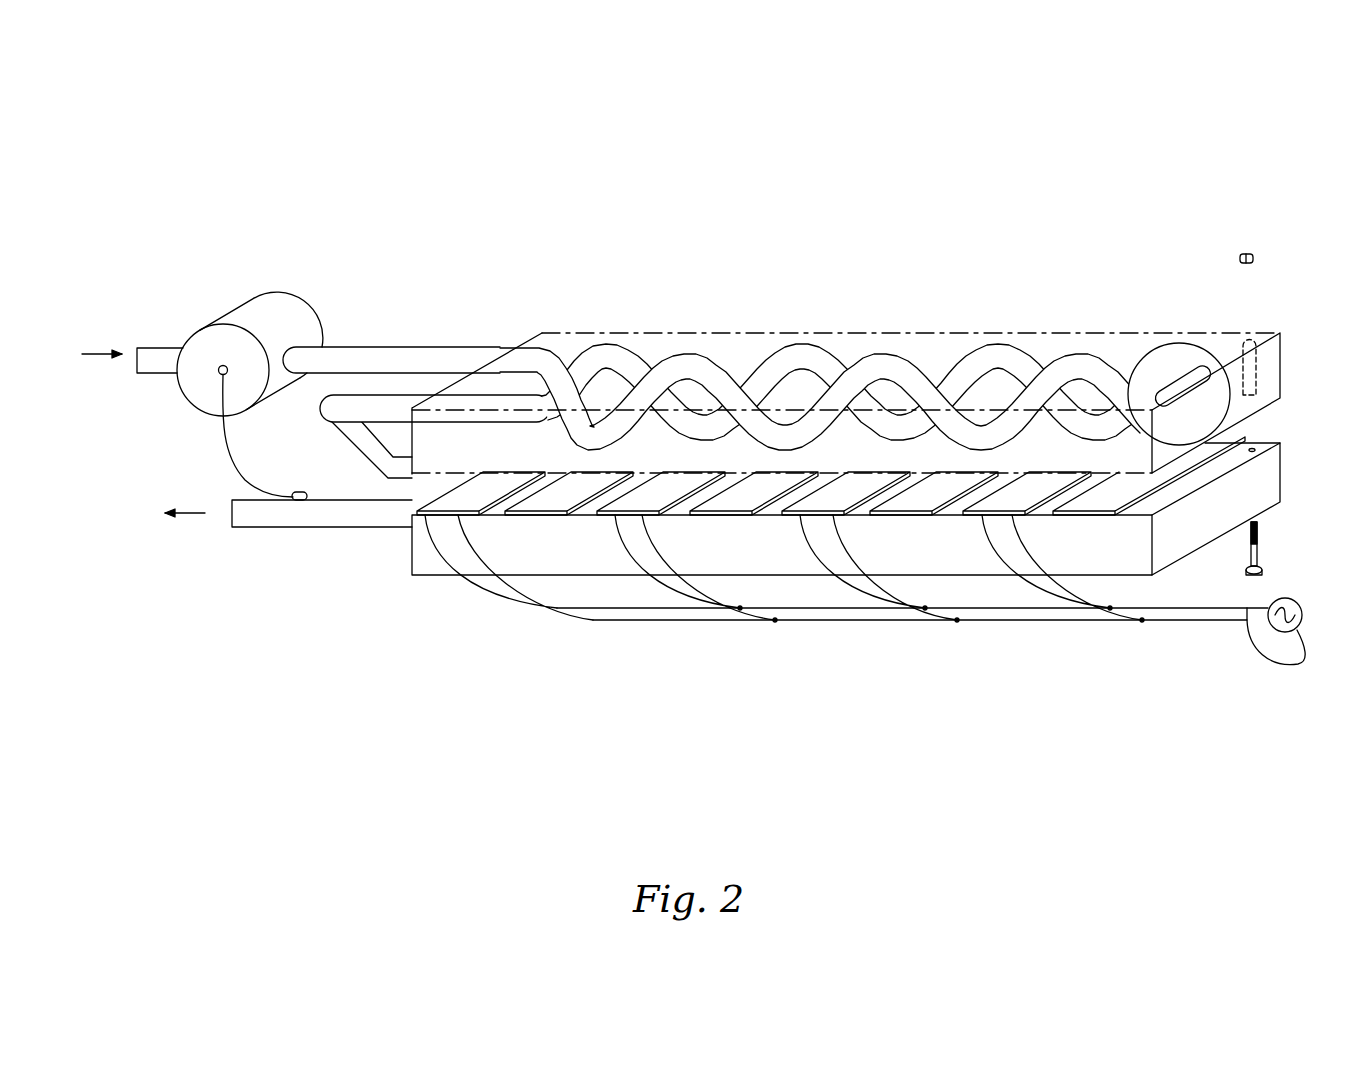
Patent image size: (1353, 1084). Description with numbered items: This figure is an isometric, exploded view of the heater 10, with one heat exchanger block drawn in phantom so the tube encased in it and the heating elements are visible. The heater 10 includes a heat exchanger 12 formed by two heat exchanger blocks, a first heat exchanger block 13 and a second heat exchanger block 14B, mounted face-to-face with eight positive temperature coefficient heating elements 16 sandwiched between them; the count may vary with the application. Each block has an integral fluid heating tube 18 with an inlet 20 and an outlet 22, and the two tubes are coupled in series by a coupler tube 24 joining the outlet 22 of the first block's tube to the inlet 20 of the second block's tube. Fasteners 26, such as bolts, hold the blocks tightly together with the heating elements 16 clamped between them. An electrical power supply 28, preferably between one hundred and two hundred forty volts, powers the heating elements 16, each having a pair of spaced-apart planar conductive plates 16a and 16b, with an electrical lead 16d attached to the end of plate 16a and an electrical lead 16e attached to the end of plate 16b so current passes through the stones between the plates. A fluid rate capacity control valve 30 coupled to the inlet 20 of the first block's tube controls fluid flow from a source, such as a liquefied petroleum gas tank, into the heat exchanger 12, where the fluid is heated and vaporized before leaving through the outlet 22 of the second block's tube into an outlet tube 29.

The heater 10 is at (1112, 170).
The heat exchanger 12 is at (1078, 320).
The heat exchanger block 13 is at (1178, 558).
The electrode lead 14B is at (1127, 545).
The positive temperature coefficient heating elements 16 is at (488, 472).
The conductive plate 16a is at (722, 498).
The conductive plate 16b is at (745, 500).
The electrical lead 16d is at (620, 557).
The electrical lead 16e is at (458, 538).
The fluid heating tube 18 is at (952, 345).
The inlet 20 is at (445, 355).
The outlet 22 is at (390, 404).
The coupler tube 24 is at (348, 448).
The fasteners 26 is at (1260, 548).
The electrical power supply 28 is at (1288, 599).
The outlet tube 29 is at (290, 520).
The fluid rate capacity control valve 30 is at (250, 297).